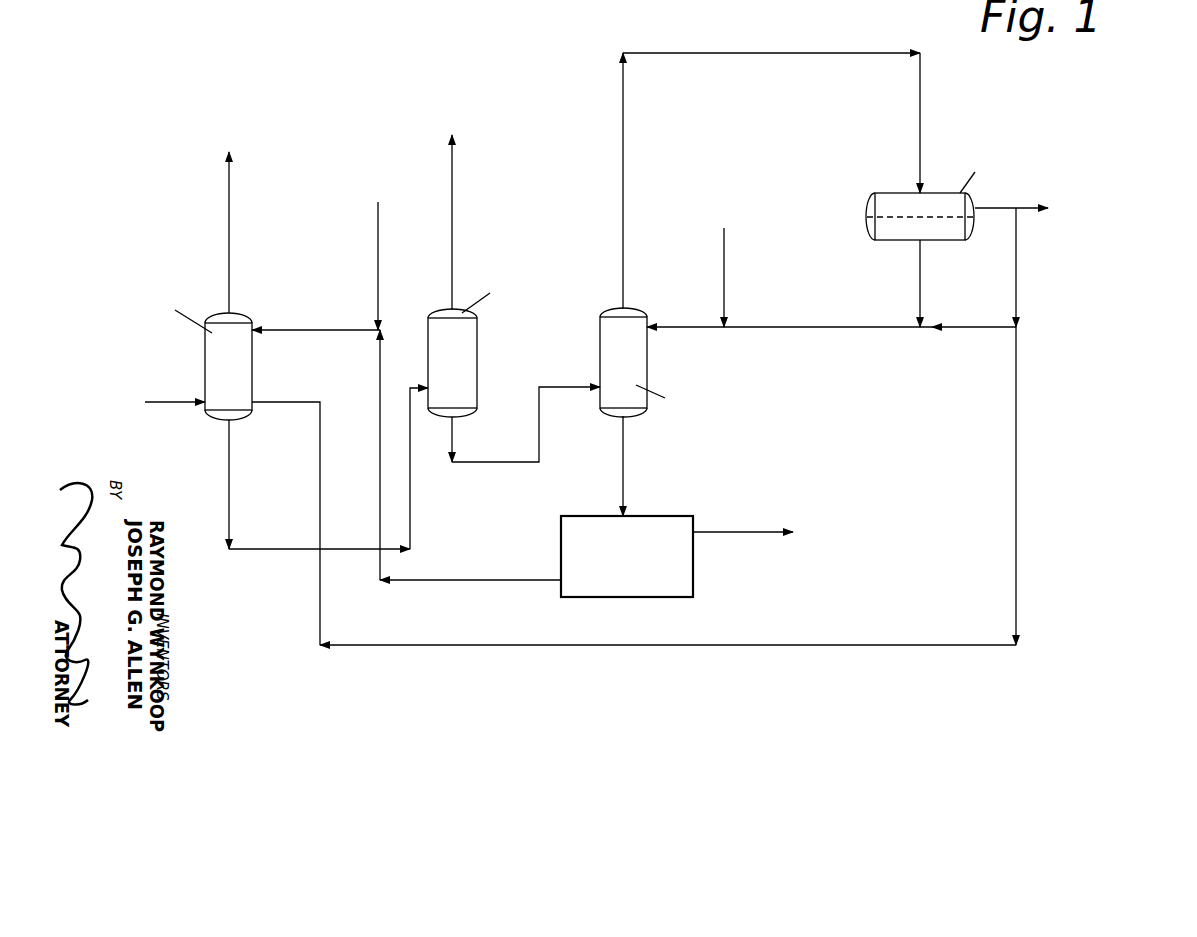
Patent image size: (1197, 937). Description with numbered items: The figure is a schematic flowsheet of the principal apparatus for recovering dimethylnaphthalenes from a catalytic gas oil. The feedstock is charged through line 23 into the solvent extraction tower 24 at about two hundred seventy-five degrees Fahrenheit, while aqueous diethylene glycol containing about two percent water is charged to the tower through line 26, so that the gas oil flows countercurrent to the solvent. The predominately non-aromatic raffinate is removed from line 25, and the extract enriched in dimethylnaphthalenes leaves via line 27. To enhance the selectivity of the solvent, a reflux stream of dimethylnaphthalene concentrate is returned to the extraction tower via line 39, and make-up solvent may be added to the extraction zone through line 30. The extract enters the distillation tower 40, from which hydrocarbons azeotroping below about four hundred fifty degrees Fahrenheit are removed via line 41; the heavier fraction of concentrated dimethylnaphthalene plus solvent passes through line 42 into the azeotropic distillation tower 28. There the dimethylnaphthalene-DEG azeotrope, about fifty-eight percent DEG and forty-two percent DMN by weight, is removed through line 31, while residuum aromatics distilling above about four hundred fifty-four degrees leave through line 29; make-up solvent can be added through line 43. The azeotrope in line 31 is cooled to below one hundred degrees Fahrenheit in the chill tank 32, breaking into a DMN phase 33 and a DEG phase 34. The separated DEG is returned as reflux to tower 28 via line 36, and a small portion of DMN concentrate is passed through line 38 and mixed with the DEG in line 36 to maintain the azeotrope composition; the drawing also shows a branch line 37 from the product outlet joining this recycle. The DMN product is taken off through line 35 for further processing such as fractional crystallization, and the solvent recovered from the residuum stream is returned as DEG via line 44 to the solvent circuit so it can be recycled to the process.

The feed line 23 is at (167, 405).
The solvent extraction tower 24 is at (205, 360).
The raffinate line 25 is at (229, 198).
The solvent line 26 is at (322, 328).
The extract line 27 is at (229, 497).
The azeotropic distillation tower 28 is at (610, 347).
The residuum line 29 is at (627, 473).
The make-up solvent line 30 is at (380, 243).
The azeotrope line 31 is at (622, 150).
The chill tank 32 is at (893, 192).
The DMN phase 33 is at (888, 210).
The DEG phase 34 is at (882, 232).
The DMN product line 35 is at (997, 205).
The reflux line 36 is at (918, 268).
The branch line from outlet 35 37 is at (1016, 265).
The DMN concentrate line 38 is at (965, 327).
The reflux line 39 is at (270, 405).
The distillation tower 40 is at (463, 354).
The overhead line 41 is at (452, 213).
The bottoms line 42 is at (453, 440).
The make-up solvent line 43 is at (724, 265).
The diethylene glycol return line from solvent recovery 44 is at (377, 435).